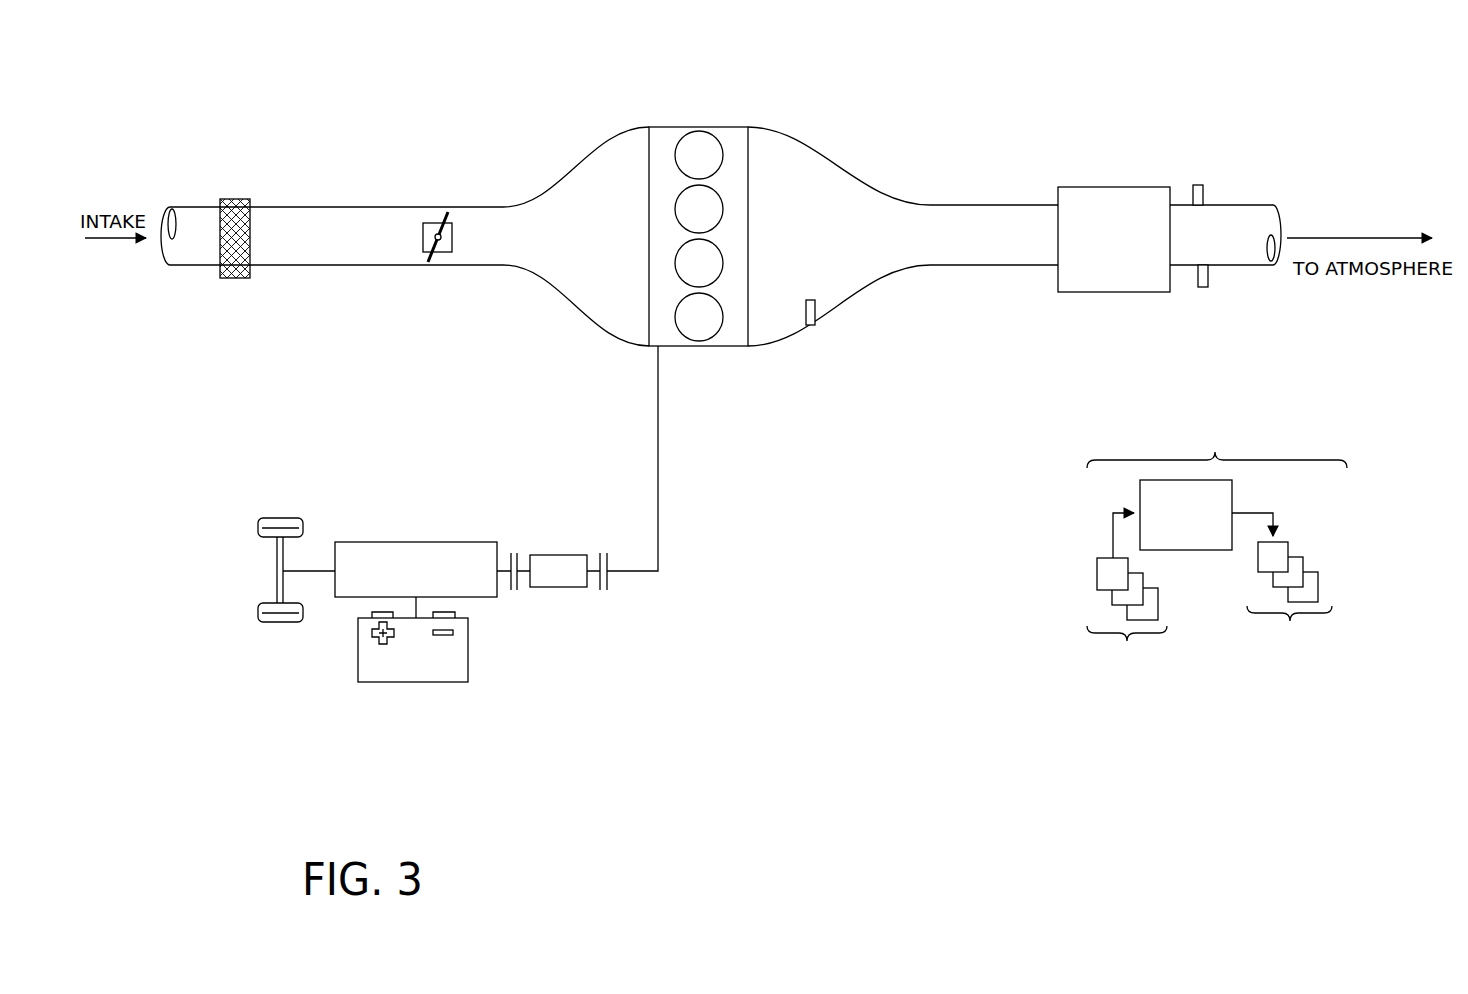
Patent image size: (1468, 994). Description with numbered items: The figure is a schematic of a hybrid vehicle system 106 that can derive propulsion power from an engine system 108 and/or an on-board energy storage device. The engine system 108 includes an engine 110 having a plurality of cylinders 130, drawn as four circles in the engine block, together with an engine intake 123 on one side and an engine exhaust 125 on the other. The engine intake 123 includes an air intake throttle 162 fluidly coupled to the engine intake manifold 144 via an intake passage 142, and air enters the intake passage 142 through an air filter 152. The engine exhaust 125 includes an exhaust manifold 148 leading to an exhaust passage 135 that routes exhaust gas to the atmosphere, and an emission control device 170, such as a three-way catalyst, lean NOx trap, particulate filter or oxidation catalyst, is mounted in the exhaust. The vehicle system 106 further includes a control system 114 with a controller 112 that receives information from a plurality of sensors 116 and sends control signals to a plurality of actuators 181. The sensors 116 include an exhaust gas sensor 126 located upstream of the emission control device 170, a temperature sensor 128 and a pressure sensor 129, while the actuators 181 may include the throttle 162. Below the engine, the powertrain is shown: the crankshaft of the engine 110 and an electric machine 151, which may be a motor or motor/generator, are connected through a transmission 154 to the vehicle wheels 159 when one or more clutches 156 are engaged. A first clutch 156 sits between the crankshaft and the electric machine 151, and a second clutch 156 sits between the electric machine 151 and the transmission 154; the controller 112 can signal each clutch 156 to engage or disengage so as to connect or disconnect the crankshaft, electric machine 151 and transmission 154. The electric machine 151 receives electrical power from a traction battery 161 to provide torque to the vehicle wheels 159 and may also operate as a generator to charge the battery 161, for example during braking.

The hybrid vehicle system 106 is at (187, 108).
The engine system 108 is at (1305, 100).
The engine 110 is at (721, 236).
The controller 112 is at (1186, 515).
The control system 114 is at (1217, 550).
The sensors 116 is at (1127, 600).
The engine intake 123 is at (573, 160).
The engine exhaust 125 is at (865, 170).
The exhaust gas sensor 126 is at (815, 305).
The temperature sensor 128 is at (1205, 287).
The pressure sensor 129 is at (1200, 185).
The cylinders 130 is at (723, 148).
The exhaust passage 135 is at (1258, 205).
The intake passage 142 is at (202, 268).
The engine intake manifold 144 is at (576, 286).
The exhaust manifold 148 is at (839, 286).
The electric machine 151 is at (560, 588).
The air filter 152 is at (236, 199).
The transmission 154 is at (357, 597).
The clutches 156 is at (517, 560).
The vehicle wheels 159 is at (280, 622).
The traction battery 161 is at (420, 683).
The air intake throttle 162 is at (452, 249).
The emission control device 170 is at (1100, 177).
The actuators 181 is at (1282, 591).